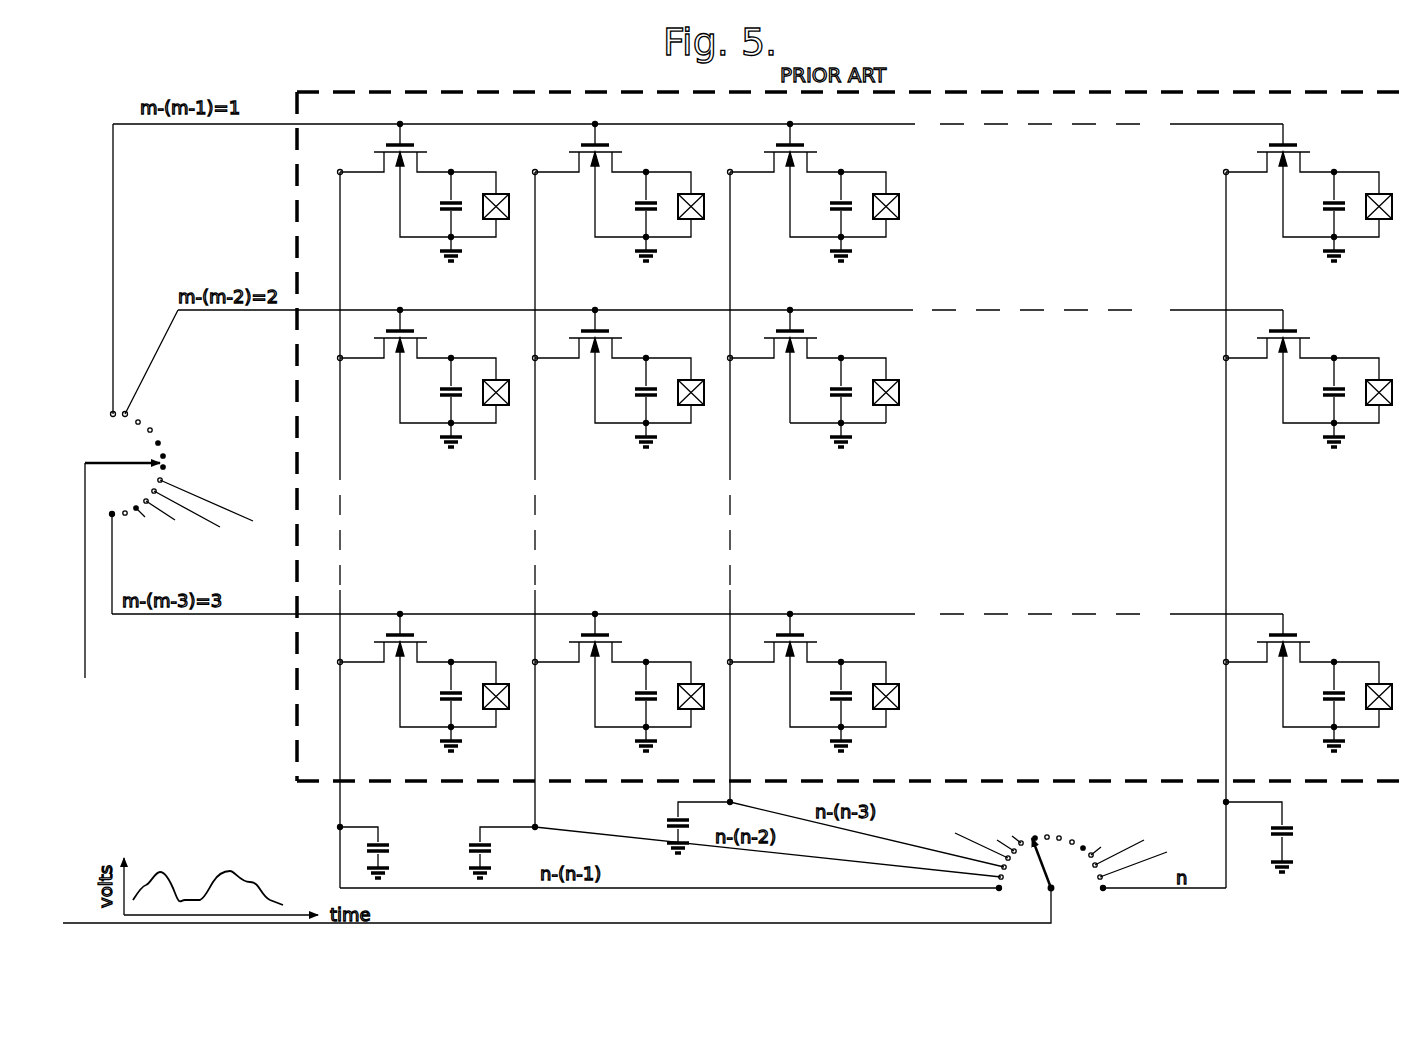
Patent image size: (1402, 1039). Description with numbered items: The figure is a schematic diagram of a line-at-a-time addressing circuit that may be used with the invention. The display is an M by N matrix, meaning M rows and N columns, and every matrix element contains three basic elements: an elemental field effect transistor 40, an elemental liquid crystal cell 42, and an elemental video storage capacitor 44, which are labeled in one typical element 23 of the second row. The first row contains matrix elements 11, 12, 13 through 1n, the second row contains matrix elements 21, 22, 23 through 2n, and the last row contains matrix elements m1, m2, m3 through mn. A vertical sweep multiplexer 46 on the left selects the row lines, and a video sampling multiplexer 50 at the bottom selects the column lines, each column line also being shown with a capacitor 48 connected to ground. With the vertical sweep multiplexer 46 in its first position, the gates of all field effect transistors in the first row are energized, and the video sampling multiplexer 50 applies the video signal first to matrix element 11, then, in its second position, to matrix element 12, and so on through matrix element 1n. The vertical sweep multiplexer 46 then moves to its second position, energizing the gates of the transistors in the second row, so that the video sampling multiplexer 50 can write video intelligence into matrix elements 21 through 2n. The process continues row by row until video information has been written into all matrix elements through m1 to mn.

The matrix element 11 is at (463, 155).
The matrix element 12 is at (651, 155).
The matrix element 13 is at (845, 155).
The matrix element 1n is at (1330, 155).
The matrix element 21 is at (447, 345).
The matrix element 22 is at (650, 345).
The matrix element 23 is at (843, 378).
The matrix element 2n is at (1330, 352).
The matrix element m1 is at (447, 646).
The matrix element m2 is at (650, 646).
The matrix element m3 is at (848, 646).
The matrix element mn is at (1322, 652).
The elemental field effect transistor 40 is at (799, 366).
The elemental liquid crystal cell 42 is at (894, 390).
The elemental video storage capacitor 44 is at (838, 402).
The vertical sweep multiplexer 46 is at (115, 463).
The column line capacitor 48 is at (1286, 824).
The video sampling multiplexer 50 is at (1055, 880).